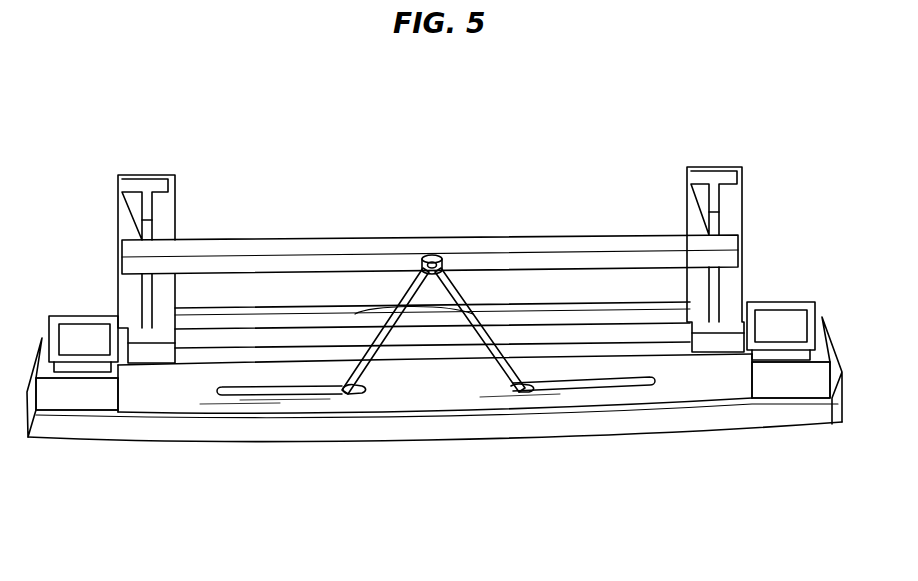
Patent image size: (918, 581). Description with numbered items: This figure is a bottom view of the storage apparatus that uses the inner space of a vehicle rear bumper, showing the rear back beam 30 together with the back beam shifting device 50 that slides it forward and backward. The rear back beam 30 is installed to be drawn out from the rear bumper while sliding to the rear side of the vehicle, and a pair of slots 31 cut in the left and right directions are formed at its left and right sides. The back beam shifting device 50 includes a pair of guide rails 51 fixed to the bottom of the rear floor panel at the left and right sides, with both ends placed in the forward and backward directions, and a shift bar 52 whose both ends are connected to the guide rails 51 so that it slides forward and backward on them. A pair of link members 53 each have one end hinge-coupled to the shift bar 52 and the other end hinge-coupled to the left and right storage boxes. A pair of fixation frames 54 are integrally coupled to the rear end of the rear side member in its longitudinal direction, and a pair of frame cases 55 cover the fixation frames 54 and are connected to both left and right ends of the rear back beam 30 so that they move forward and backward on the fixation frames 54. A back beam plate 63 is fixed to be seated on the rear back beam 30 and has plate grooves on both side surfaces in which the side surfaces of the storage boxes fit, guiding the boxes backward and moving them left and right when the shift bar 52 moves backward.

The rear back beam 30 is at (707, 432).
The slots 31 is at (283, 396).
The back beam shifting device 50 is at (126, 158).
The guide rails 51 is at (125, 217).
The shift bar 52 is at (553, 245).
The link members 53 is at (458, 290).
The fixation frames 54 is at (77, 335).
The frame cases 55 is at (67, 398).
The back beam plate 63 is at (437, 346).